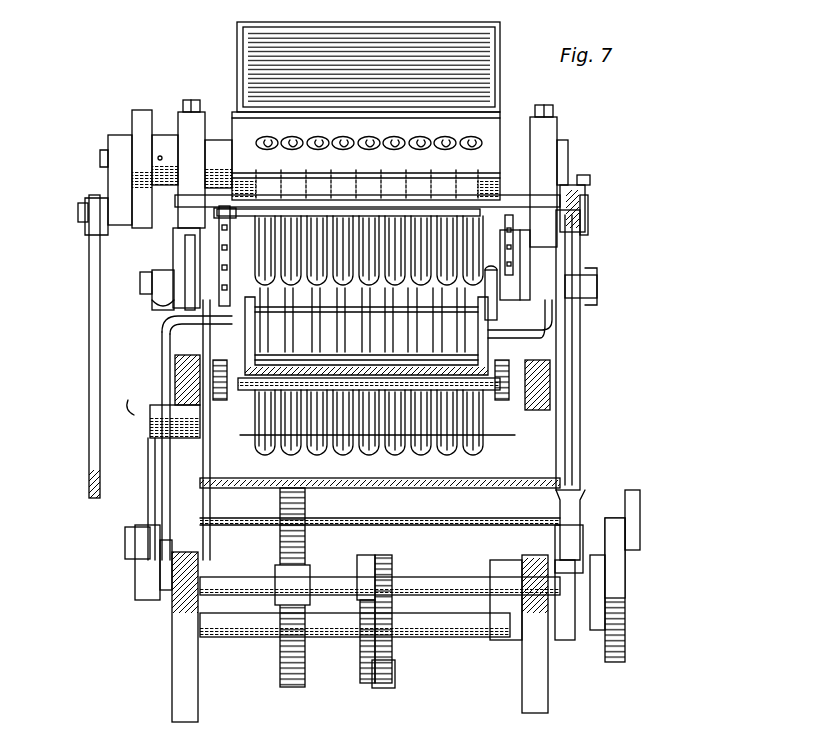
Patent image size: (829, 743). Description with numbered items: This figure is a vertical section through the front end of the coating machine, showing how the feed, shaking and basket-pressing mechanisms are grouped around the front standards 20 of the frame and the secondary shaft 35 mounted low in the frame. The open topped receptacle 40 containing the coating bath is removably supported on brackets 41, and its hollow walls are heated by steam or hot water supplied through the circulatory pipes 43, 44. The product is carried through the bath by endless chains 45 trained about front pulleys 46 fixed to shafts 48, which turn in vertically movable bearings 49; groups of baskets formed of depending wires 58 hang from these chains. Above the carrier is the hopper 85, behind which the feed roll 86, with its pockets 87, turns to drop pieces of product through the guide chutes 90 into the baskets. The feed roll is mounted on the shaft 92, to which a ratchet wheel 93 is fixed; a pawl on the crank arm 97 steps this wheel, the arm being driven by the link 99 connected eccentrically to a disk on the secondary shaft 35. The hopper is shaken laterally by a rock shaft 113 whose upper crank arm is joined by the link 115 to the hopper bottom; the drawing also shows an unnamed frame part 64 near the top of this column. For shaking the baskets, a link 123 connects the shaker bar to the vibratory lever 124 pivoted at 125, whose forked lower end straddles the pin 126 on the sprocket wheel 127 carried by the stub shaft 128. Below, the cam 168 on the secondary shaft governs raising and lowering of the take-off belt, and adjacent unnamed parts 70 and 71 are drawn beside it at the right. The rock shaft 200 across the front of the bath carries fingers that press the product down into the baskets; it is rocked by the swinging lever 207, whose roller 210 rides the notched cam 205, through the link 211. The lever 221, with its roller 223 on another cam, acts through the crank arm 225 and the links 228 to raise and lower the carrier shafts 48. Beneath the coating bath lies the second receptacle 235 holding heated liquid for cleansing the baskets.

The front standards 20 is at (180, 678).
The secondary shaft 35 is at (432, 584).
The receptacle 40 is at (490, 292).
The brackets 41 is at (213, 360).
The circulatory pipe 43 is at (186, 250).
The circulatory pipe 44 is at (540, 262).
The endless chains 45 is at (246, 420).
The front pulleys 46 is at (215, 238).
The shafts 48 is at (140, 290).
The bearings 49 is at (140, 282).
The wires 58 is at (470, 446).
The column 64 is at (540, 205).
The hub 70 is at (620, 583).
The lever 71 is at (632, 500).
The hopper 85 is at (490, 72).
The feed roll 86 is at (500, 122).
The pockets 87 is at (470, 136).
The guide chutes 90 is at (448, 174).
The shaft 92 is at (108, 150).
The ratchet wheel 93 is at (146, 112).
The crank arm 97 is at (112, 190).
The link 99 is at (90, 378).
The rock shaft 113 is at (584, 222).
The link 115 is at (575, 210).
The link 123 is at (170, 324).
The vibratory lever 124 is at (152, 360).
The pivot 125 is at (148, 408).
The pin 126 is at (138, 548).
The sprocket wheel 127 is at (150, 572).
The stub shaft 128 is at (210, 540).
The cam 168 is at (590, 575).
The rock shaft 200 is at (366, 331).
The cam 205 is at (628, 600).
The swinging lever 207 is at (562, 458).
The roller 210 is at (560, 575).
The link 211 is at (555, 345).
The lever 221 is at (372, 642).
The roller 223 is at (400, 686).
The crank arm 225 is at (385, 560).
The links 228 is at (165, 460).
The second receptacle 235 is at (482, 482).